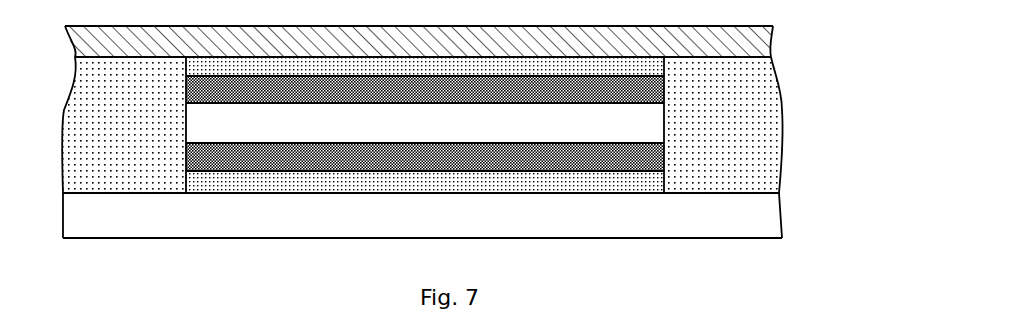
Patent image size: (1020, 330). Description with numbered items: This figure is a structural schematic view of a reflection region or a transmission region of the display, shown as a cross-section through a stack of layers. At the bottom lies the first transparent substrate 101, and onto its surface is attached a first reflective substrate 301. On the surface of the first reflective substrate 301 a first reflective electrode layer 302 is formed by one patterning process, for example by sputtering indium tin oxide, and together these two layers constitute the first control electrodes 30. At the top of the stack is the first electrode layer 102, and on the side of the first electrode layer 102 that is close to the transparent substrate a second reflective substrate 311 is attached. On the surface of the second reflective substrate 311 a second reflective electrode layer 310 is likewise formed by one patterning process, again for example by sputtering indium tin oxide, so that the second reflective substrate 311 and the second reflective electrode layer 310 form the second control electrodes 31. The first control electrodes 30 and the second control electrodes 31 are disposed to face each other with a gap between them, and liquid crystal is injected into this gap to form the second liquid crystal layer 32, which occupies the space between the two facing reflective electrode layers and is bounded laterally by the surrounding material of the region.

The first transparent substrate 101 is at (778, 220).
The first electrode layer 102 is at (771, 33).
The first control electrodes 30 is at (851, 157).
The first reflective substrate 301 is at (660, 180).
The first reflective electrode layer 302 is at (658, 158).
The second control electrodes 31 is at (851, 67).
The second reflective electrode layer 310 is at (668, 88).
The second reflective substrate 311 is at (697, 60).
The second liquid crystal layer 32 is at (658, 132).